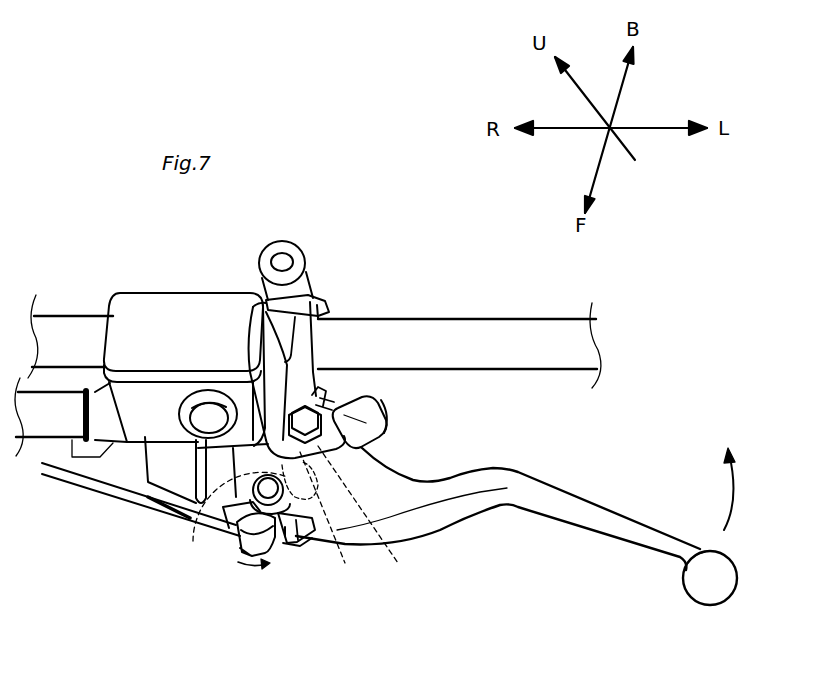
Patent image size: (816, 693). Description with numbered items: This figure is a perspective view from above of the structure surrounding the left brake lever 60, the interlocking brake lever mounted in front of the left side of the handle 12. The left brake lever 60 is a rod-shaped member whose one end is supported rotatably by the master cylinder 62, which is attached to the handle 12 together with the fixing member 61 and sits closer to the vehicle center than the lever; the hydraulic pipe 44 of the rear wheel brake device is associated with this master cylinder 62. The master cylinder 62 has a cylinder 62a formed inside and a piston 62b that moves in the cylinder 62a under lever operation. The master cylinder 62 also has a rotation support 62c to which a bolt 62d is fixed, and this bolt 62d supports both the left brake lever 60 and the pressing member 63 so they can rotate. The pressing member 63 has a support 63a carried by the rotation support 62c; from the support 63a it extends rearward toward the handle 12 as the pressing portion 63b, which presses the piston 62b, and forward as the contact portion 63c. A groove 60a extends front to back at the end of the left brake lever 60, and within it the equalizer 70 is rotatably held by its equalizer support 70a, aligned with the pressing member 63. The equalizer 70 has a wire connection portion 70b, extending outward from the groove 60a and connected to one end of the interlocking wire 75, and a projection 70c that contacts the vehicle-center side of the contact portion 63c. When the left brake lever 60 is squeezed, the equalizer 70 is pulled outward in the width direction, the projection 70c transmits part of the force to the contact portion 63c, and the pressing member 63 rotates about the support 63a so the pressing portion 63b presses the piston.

The handle 12 is at (460, 333).
The hydraulic pipe 44 is at (55, 430).
The left brake lever 60 is at (570, 500).
The groove 60a is at (293, 542).
The fixing member 61 is at (322, 290).
The master cylinder 62 is at (345, 388).
The cylinder 62a is at (330, 405).
The piston 62b is at (328, 400).
The rotation support 62c is at (350, 440).
The bolt 62d is at (298, 424).
The pressing member 63 is at (405, 430).
The support 63a is at (379, 517).
The pressing portion 63b is at (368, 414).
The contact portion 63c is at (332, 520).
The equalizer 70 is at (258, 588).
The equalizer support 70a is at (283, 550).
The wire connection portion 70b is at (250, 530).
The projection 70c is at (223, 516).
The interlocking wire 75 is at (120, 492).